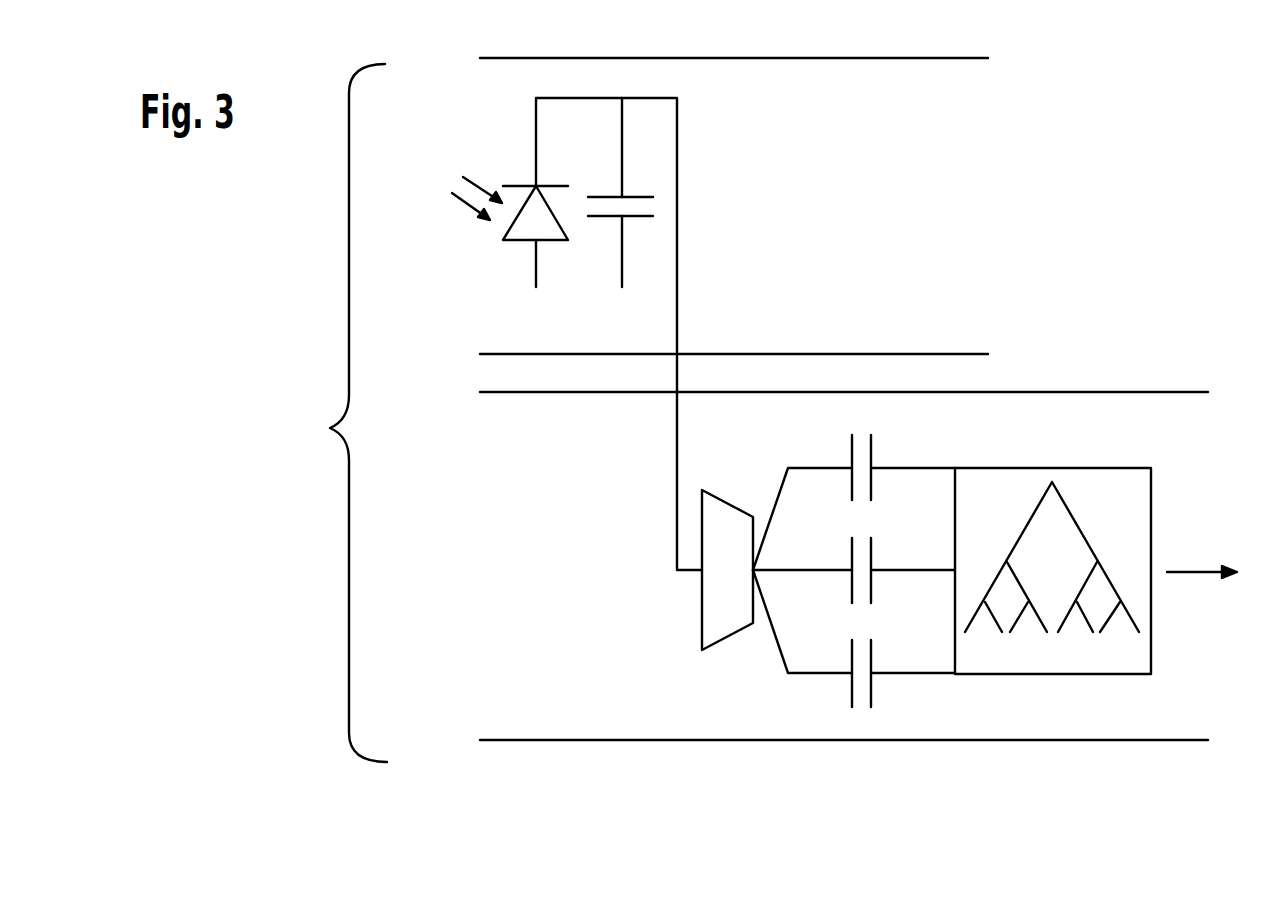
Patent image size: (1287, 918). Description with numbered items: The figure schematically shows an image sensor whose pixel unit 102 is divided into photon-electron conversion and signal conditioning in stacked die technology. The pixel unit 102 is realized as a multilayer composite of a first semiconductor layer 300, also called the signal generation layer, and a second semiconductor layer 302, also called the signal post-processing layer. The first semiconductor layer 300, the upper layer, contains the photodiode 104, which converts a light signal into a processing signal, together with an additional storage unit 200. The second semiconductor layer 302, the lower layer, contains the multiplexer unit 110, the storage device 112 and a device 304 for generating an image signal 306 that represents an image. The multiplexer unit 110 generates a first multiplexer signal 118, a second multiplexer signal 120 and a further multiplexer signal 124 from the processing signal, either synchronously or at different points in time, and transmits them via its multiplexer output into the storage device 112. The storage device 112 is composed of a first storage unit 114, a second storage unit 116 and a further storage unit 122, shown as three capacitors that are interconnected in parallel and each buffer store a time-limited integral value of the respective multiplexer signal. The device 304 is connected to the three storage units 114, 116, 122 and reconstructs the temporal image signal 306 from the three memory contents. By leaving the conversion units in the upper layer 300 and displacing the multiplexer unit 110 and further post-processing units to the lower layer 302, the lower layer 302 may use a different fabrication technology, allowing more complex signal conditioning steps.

The pixel unit 102 is at (330, 428).
The photodiode 104 is at (517, 184).
The additional storage unit 200 is at (600, 196).
The first semiconductor layer 300 is at (937, 60).
The second semiconductor layer 302 is at (650, 742).
The multiplexer unit 110 is at (718, 645).
The storage device 112 is at (882, 632).
The first storage unit 114 is at (871, 448).
The second storage unit 116 is at (871, 583).
The further storage unit 122 is at (914, 678).
The first multiplexer signal 118 is at (770, 500).
The second multiplexer signal 120 is at (787, 566).
The further multiplexer signal 124 is at (768, 640).
The device for generating an image signal 304 is at (1151, 510).
The image signal 306 is at (1195, 575).